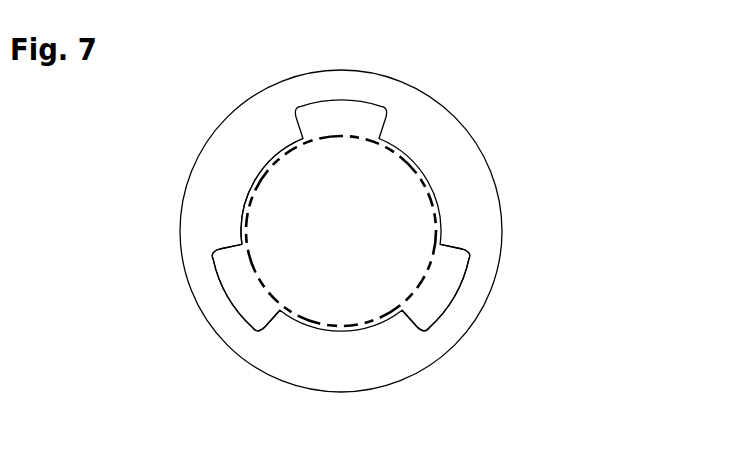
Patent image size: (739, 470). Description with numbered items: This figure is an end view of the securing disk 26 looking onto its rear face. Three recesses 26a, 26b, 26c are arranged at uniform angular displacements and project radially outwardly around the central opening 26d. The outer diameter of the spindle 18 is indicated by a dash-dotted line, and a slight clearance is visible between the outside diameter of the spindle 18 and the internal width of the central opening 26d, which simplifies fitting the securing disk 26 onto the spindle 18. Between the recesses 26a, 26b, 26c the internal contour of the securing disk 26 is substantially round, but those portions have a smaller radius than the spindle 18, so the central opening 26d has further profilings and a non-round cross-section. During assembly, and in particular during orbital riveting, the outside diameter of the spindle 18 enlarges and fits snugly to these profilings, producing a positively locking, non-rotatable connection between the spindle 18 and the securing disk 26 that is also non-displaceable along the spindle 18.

The securing disk 26 is at (440, 127).
The recess 26a is at (367, 127).
The recess 26b is at (436, 287).
The recess 26c is at (253, 302).
The central opening 26d is at (248, 188).
The spindle 18 is at (418, 287).